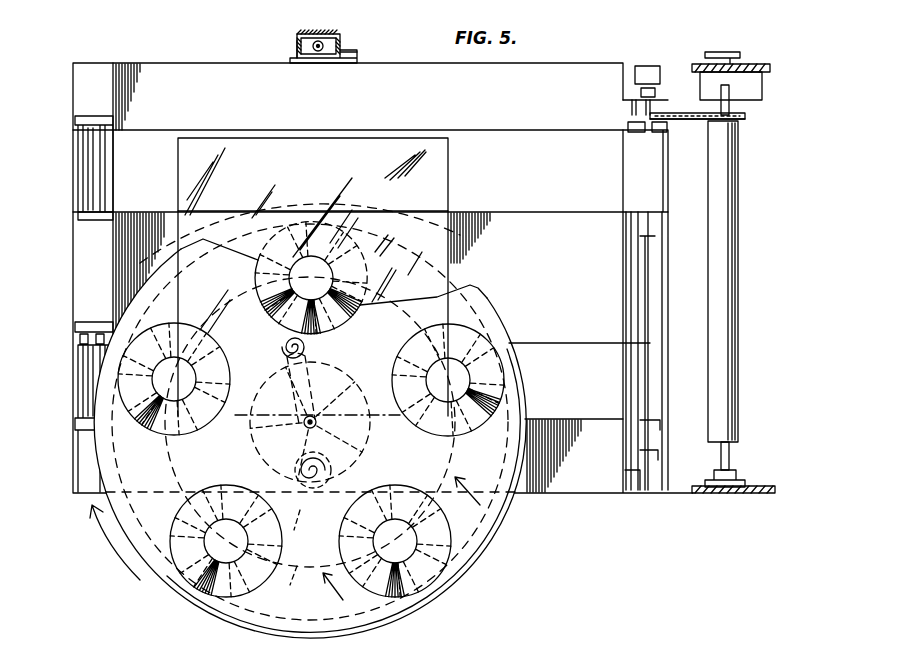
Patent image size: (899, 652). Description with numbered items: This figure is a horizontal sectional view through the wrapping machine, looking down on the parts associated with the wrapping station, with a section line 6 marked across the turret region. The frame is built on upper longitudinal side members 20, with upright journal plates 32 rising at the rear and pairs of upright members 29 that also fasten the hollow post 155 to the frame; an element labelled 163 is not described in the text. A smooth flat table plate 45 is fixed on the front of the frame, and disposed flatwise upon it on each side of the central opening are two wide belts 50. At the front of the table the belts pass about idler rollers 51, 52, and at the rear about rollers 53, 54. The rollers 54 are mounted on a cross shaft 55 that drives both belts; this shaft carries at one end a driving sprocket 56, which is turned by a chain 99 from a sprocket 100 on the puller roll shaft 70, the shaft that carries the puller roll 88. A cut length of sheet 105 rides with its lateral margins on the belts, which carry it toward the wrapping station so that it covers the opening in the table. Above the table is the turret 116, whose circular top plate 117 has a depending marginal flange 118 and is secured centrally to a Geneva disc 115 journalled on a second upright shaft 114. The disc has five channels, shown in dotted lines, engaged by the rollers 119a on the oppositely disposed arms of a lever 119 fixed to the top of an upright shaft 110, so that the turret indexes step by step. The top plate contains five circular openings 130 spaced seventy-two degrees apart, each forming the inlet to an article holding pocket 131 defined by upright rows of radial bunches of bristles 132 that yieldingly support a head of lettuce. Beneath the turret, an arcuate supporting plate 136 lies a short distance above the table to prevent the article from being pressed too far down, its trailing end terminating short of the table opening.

The shaft 163 is at (297, 40).
The hollow post 155 is at (352, 24).
The upright members 29 is at (345, 58).
The table plate 45 is at (383, 278).
The upright journal plates 32 is at (760, 66).
The upper longitudinal side members 20 is at (770, 76).
The puller roll shaft 70 is at (735, 108).
The sprocket 100 is at (742, 119).
The puller roll 88 is at (737, 170).
The chain 99 is at (692, 122).
The cross shaft 55 is at (660, 103).
The driving sprocket 56 is at (623, 112).
The length of sheet 105 is at (448, 170).
The idler rollers 52 is at (78, 130).
The idler rollers 51 is at (105, 150).
The belts 50 is at (556, 212).
The rollers 53 is at (628, 228).
The rollers 54 is at (650, 221).
The turret 116 is at (505, 303).
The depending marginal flange 118 is at (522, 380).
The circular top plate 117 is at (310, 422).
The circular openings 130 is at (356, 306).
The article holding pocket 131 is at (311, 409).
The bristles 132 is at (392, 585).
The Geneva disc 115 is at (322, 367).
The second upright shaft 114 is at (313, 418).
The lever 119 is at (320, 428).
The roller 119a is at (332, 476).
The upright shaft 110 is at (309, 531).
The arcuate supporting plate 136 is at (299, 571).
The section line 6 is at (291, 540).